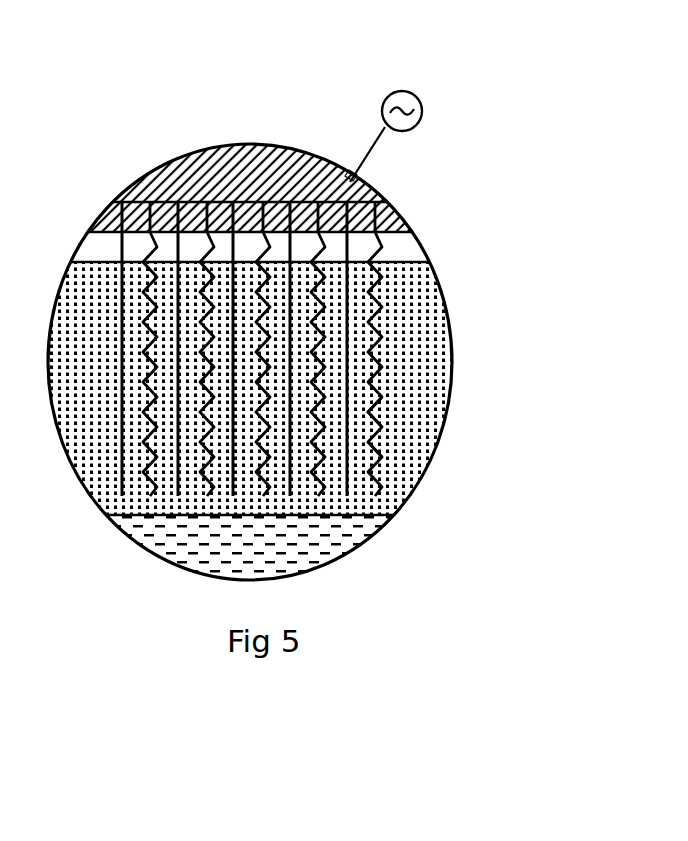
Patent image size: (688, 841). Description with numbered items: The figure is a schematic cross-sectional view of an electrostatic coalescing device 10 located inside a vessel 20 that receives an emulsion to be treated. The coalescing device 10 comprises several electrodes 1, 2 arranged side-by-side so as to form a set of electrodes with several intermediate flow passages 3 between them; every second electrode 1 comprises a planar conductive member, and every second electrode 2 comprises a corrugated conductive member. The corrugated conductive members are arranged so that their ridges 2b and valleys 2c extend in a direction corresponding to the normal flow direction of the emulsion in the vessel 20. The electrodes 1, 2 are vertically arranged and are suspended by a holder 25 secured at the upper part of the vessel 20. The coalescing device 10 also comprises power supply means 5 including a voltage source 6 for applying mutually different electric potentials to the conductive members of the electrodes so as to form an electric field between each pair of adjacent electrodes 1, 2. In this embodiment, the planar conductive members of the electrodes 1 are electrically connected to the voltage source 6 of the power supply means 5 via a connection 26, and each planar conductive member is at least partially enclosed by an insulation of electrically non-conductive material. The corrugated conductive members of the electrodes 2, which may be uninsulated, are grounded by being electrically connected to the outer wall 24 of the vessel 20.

The electrostatic coalescing device 10 is at (240, 120).
The power supply means 5 is at (402, 158).
The voltage source 6 is at (423, 95).
The connection 26 is at (370, 153).
The holder 25 is at (164, 172).
The outer wall 24 is at (390, 210).
The intermediate flow passages 3 is at (383, 297).
The electrode 2 is at (383, 336).
The ridges 2b is at (377, 409).
The valleys 2c is at (377, 441).
The electrode 1 is at (349, 375).
The vessel 20 is at (432, 455).